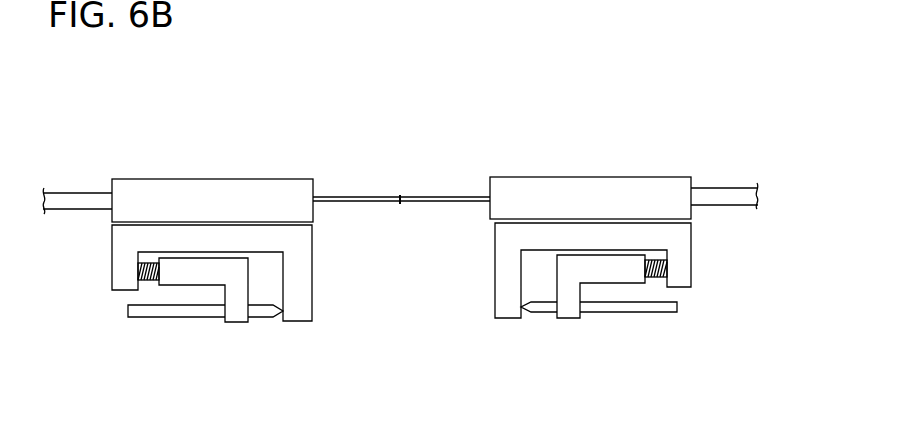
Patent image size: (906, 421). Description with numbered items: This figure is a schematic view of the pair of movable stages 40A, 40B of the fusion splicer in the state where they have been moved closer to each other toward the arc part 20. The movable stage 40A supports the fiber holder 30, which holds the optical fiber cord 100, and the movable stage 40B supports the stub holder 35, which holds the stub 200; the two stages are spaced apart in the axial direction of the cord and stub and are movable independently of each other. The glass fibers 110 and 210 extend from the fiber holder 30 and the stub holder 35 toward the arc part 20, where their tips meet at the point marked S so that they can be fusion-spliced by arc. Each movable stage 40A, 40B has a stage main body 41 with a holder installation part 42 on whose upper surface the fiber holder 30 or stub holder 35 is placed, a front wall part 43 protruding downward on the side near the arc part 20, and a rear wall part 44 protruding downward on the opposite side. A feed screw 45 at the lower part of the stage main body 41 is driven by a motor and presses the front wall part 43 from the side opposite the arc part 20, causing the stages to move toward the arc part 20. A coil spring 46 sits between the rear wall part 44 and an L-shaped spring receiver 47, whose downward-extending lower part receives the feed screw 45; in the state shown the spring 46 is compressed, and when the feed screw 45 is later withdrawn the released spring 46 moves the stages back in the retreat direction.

The arc part 20 is at (383, 124).
The fiber holder 30 is at (211, 178).
The stub holder 35 is at (588, 176).
The movable stage 40A is at (113, 322).
The movable stage 40B is at (692, 322).
The stage main body 41 is at (106, 269).
The holder installation part 42 is at (163, 242).
The front wall part 43 is at (312, 270).
The rear wall part 44 is at (112, 238).
The feed screw 45 is at (173, 317).
The spring 46 is at (147, 281).
The spring receiver 47 is at (207, 272).
The optical fiber cord 100 is at (75, 192).
The glass fiber 110 is at (356, 196).
The stub 200 is at (724, 187).
The glass fiber 210 is at (440, 196).
The splice point S is at (400, 196).